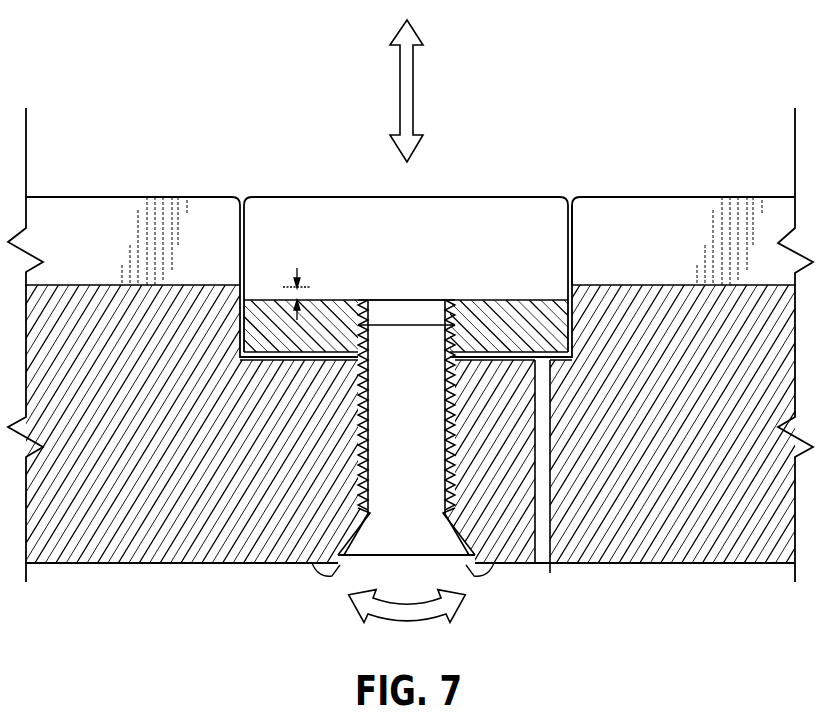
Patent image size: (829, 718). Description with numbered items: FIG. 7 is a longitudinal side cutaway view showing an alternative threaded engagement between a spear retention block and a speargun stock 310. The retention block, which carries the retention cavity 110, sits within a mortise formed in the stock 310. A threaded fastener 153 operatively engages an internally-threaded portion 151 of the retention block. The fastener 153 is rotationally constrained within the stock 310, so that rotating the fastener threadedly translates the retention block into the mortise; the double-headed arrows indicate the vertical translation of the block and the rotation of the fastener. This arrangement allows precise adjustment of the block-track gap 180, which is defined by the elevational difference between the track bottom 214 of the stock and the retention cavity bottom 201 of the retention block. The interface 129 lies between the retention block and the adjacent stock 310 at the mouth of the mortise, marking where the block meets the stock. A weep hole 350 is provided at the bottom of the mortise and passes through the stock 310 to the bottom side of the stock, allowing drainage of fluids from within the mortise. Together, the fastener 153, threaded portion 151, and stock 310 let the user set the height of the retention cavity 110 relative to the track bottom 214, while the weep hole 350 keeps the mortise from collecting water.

The retention cavity 110 is at (316, 221).
The interface between body and substrate 129 is at (570, 198).
The internally-threaded portion 151 is at (426, 323).
The threaded fastener 153 is at (425, 543).
The block-track gap 180 is at (297, 268).
The retention cavity bottom 201 is at (472, 283).
The track bottom 214 is at (645, 284).
The speargun stock 310 is at (719, 346).
The weep hole 350 is at (536, 533).